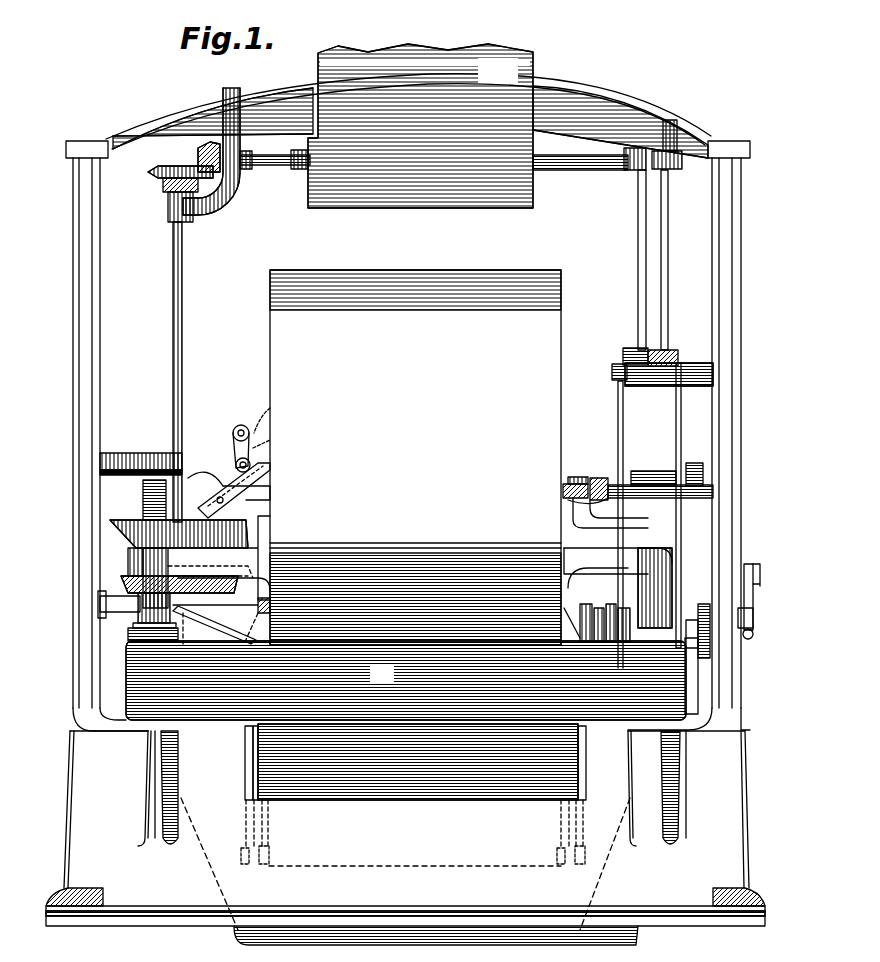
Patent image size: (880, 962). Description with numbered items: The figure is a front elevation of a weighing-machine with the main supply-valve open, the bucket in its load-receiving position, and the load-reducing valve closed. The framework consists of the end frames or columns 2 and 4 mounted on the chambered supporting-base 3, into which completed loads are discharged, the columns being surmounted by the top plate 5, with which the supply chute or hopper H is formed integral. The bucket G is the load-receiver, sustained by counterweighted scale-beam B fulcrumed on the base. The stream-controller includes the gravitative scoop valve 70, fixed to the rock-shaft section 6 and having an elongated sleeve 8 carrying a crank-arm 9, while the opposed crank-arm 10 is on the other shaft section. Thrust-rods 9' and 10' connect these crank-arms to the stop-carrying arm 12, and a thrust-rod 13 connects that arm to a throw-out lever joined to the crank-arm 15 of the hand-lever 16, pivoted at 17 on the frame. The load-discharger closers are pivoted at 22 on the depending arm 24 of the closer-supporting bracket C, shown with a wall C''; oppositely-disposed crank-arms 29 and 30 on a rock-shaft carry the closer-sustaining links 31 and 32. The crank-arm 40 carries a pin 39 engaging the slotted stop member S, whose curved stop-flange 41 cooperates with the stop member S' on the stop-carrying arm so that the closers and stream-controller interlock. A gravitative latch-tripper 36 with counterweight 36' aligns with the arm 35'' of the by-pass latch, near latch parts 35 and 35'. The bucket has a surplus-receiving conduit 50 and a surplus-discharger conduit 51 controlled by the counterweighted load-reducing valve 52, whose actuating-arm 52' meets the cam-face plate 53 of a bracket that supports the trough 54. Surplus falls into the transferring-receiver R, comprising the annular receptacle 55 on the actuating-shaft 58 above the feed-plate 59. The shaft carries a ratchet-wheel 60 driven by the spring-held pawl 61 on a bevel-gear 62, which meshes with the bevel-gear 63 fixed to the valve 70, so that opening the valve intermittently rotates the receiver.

The end frame or column 2 is at (726, 308).
The chambered supporting-base 3 is at (405, 838).
The end frame or column 4 is at (66, 350).
The top plate 5 is at (600, 88).
The rock-shaft section 6 is at (266, 158).
The elongated sleeve 8 is at (568, 160).
The crank-arm 9 is at (619, 153).
The thrust-rod 9' is at (625, 260).
The crank-arm 10 is at (673, 159).
The thrust-rod 10' is at (680, 260).
The stop-carrying arm 12 is at (656, 344).
The thrust-rod 13 is at (673, 532).
The crank-arm 15 is at (695, 622).
The hand-lever 16 is at (748, 592).
The pivot of hand-lever 17 is at (746, 612).
The closer pivot 22 is at (232, 846).
The depending arm 24 is at (236, 780).
The crank-arm 29 is at (576, 596).
The crank-arm 30 is at (604, 640).
The closer-sustaining link or connector 31 is at (565, 632).
The closer-sustaining link or connector 32 is at (618, 634).
The clutch member 35 is at (553, 485).
The clutch arm 35' is at (584, 489).
The arm on by-pass latch 35'' is at (609, 485).
The gravitative latch-tripper 36 is at (640, 504).
The counterweight 36' is at (697, 461).
The pin 39 is at (636, 574).
The crank-arm 40 is at (592, 598).
The curved stop-flange 41 is at (604, 365).
The surplus-receiving conduit 50 is at (221, 621).
The surplus-discharger conduit 51 is at (254, 400).
The counterweighted load-reducing valve 52 is at (233, 432).
The depending actuating-arm 52' is at (267, 457).
The cam or cam-face plate 53 is at (240, 484).
The trough 54 is at (252, 468).
The multicompartment annular receptacle 55 is at (103, 522).
The actuating-shaft 58 is at (165, 339).
The feed-plate 59 is at (113, 574).
The ratchet-wheel 60 is at (196, 182).
The spring-held pawl 61 is at (155, 176).
The bevel-gear 62 is at (142, 163).
The bevel-gear 63 is at (190, 145).
The gravitative scoop valve or member 70 is at (405, 190).
The supply chute or hopper H is at (498, 70).
The bucket G is at (415, 457).
The counterweighted scale-beam B is at (412, 679).
The closer-supporting bracket C is at (427, 762).
The cylinder wall C'' is at (240, 763).
The transferring-receiver R is at (188, 578).
The stop member S is at (654, 515).
The stop member S' is at (627, 347).